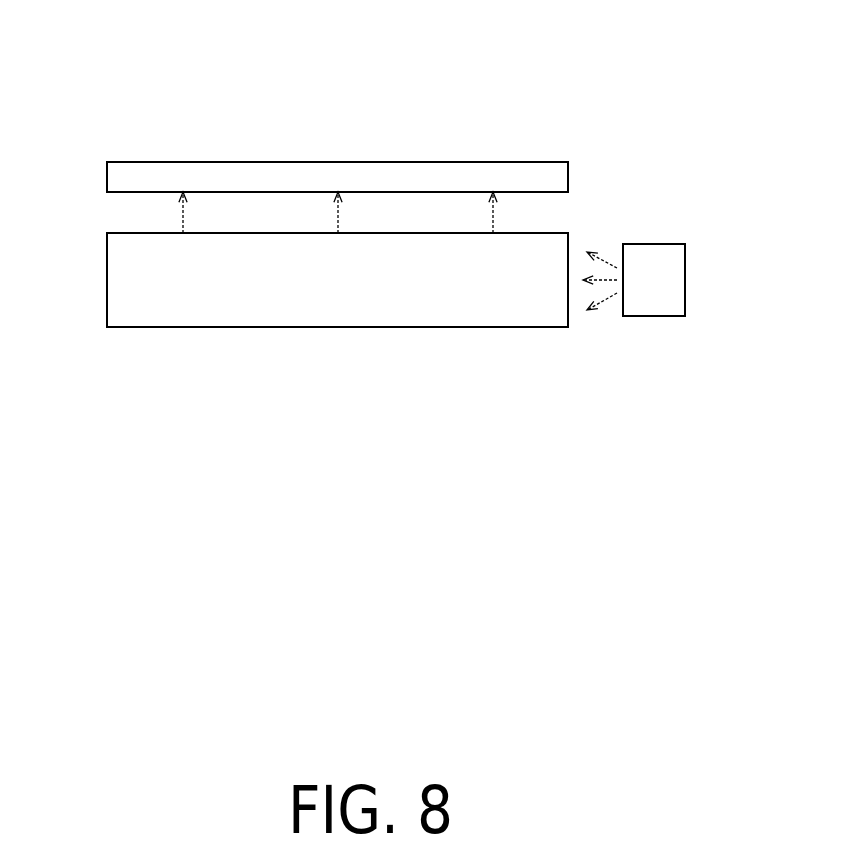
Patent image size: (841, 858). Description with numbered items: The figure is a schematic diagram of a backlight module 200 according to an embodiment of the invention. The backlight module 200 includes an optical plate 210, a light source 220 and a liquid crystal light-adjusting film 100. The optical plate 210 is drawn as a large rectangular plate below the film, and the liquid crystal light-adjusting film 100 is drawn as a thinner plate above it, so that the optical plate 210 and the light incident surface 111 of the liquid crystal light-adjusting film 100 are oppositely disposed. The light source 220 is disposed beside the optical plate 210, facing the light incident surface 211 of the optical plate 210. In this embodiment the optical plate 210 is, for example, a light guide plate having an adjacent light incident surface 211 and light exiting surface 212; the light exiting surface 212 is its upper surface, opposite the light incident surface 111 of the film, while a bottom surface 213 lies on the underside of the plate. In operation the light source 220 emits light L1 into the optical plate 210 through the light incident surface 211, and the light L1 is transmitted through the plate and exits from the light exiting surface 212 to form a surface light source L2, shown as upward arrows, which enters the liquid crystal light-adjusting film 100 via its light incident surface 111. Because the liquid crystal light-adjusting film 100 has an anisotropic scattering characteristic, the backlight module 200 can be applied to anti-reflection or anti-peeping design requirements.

The backlight module 200 is at (88, 45).
The liquid crystal light-adjusting film 100 is at (247, 175).
The light incident surface 111 is at (548, 194).
The optical plate 210 is at (163, 328).
The light incident surface 211 is at (565, 297).
The light exiting surface 212 is at (264, 236).
The bottom surface 213 is at (360, 330).
The light source 220 is at (660, 310).
The light L1 is at (601, 326).
The surface light source L2 is at (181, 217).